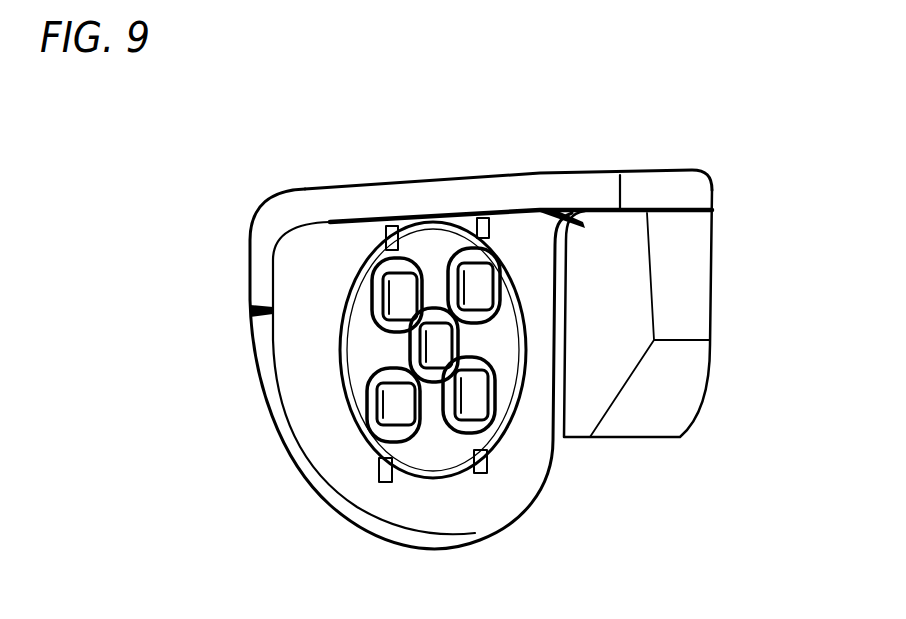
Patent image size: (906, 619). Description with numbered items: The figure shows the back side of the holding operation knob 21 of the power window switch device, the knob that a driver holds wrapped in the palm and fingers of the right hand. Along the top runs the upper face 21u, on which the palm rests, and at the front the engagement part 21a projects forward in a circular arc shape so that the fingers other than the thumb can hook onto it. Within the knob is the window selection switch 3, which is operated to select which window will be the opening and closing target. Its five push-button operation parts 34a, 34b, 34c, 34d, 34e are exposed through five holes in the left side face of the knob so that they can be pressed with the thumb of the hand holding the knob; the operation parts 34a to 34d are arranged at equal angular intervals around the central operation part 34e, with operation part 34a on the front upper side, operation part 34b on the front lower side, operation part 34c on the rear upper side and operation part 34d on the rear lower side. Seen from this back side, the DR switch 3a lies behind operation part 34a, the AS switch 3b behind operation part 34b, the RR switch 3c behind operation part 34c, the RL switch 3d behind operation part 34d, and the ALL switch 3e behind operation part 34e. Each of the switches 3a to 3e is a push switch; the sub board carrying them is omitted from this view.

The window selection switch 3 is at (340, 298).
The DR switch 3a is at (480, 283).
The AS switch 3b is at (477, 402).
The RR switch 3c is at (402, 292).
The RL switch 3d is at (397, 413).
The ALL switch 3e is at (437, 355).
The holding operation knob 21 is at (250, 268).
The engagement part 21a is at (678, 170).
The upper face 21u is at (572, 172).
The operation part 34a is at (458, 250).
The operation part 34b is at (465, 435).
The operation part 34c is at (375, 272).
The operation part 34d is at (367, 413).
The operation part 34e is at (410, 346).